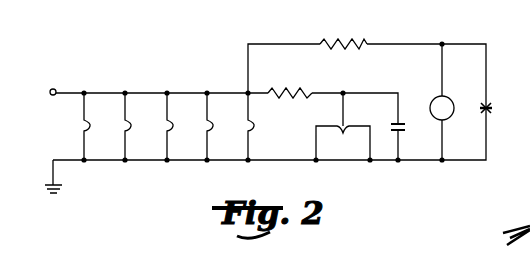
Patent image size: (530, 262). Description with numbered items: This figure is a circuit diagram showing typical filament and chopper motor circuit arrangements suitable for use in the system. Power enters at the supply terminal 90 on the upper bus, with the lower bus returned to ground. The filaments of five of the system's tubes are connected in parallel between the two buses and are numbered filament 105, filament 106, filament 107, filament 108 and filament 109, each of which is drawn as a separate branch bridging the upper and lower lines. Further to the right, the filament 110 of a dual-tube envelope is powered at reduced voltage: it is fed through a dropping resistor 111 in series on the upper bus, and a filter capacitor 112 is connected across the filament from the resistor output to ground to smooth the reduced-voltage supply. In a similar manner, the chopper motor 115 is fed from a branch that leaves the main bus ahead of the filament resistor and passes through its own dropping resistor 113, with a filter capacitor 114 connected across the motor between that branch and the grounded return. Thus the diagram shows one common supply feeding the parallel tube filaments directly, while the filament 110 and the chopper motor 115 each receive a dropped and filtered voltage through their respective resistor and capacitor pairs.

The input terminal 90 is at (55, 89).
The filament 105 is at (79, 126).
The filament 106 is at (123, 128).
The filament 107 is at (165, 128).
The filament 108 is at (205, 128).
The filament 109 is at (246, 128).
The filament 110 is at (344, 134).
The dropping resistor 111 is at (291, 89).
The filter capacitor 112 is at (399, 120).
The dropping resistor 113 is at (343, 40).
The filter capacitor 114 is at (489, 105).
The chopper motor 115 is at (449, 97).